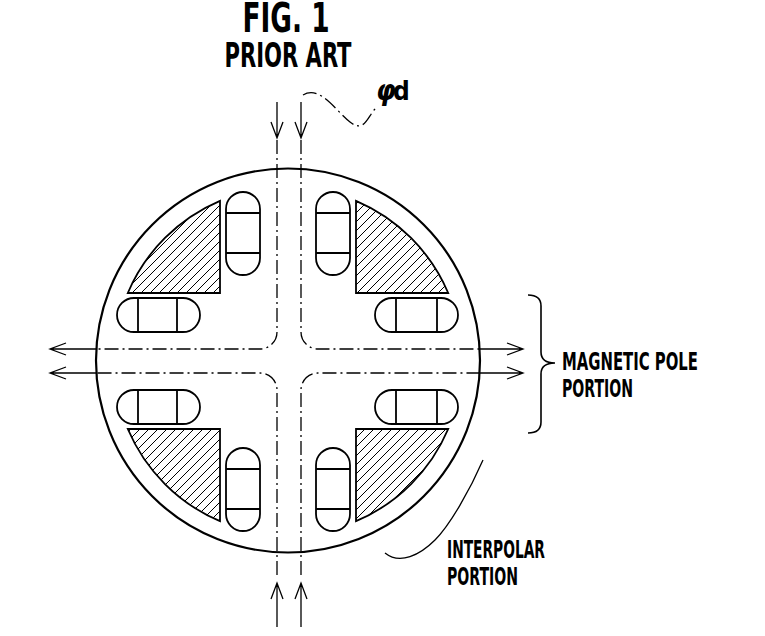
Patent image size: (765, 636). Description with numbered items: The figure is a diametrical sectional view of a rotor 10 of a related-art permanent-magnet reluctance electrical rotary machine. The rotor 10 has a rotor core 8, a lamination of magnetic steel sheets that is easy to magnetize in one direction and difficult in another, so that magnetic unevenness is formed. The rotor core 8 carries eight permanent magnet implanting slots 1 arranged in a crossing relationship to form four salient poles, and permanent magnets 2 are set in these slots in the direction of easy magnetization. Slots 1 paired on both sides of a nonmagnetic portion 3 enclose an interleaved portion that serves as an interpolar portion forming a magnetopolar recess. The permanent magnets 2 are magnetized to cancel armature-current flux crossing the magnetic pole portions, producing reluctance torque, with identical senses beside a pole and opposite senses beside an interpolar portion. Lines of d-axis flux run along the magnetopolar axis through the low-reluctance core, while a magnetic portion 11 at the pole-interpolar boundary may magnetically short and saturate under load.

The permanent magnet implanting slot 1 is at (127, 313).
The permanent magnet 2 is at (241, 212).
The nonmagnetic portion 3 is at (160, 267).
The rotor core 8 is at (268, 177).
The rotor 10 is at (160, 210).
The magnetic portion 11 is at (333, 185).